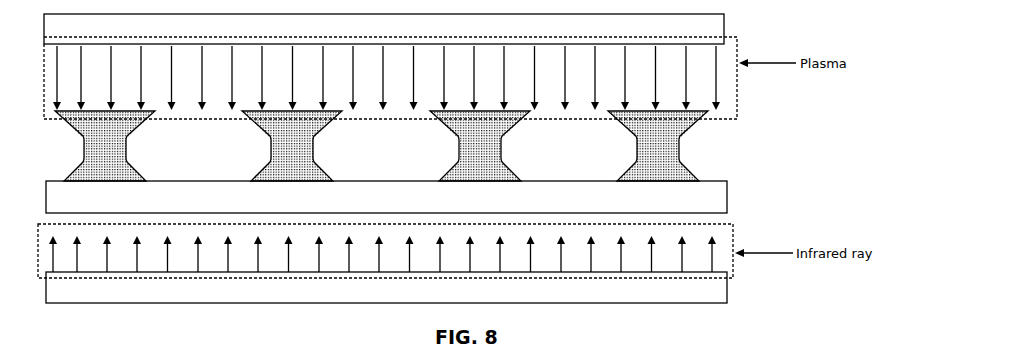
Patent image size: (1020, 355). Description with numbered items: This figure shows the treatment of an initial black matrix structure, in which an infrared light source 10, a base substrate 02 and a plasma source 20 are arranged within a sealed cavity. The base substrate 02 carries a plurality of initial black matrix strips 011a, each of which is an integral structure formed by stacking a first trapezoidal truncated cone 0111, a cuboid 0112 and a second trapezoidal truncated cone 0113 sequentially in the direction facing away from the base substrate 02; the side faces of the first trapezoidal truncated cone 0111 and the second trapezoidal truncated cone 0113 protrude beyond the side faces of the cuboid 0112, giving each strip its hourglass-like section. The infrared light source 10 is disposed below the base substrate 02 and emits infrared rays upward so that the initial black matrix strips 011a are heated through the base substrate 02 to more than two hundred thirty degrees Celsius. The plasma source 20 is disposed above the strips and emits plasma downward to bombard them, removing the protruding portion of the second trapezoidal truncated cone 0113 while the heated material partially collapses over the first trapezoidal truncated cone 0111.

The plasma source 20 is at (705, 26).
The base substrate 02 is at (700, 199).
The infrared light source 10 is at (702, 289).
The initial black matrix strip 011a is at (443, 146).
The second trapezoidal truncated cone 0113 is at (673, 128).
The cuboid 0112 is at (673, 152).
The first trapezoidal truncated cone 0111 is at (680, 174).